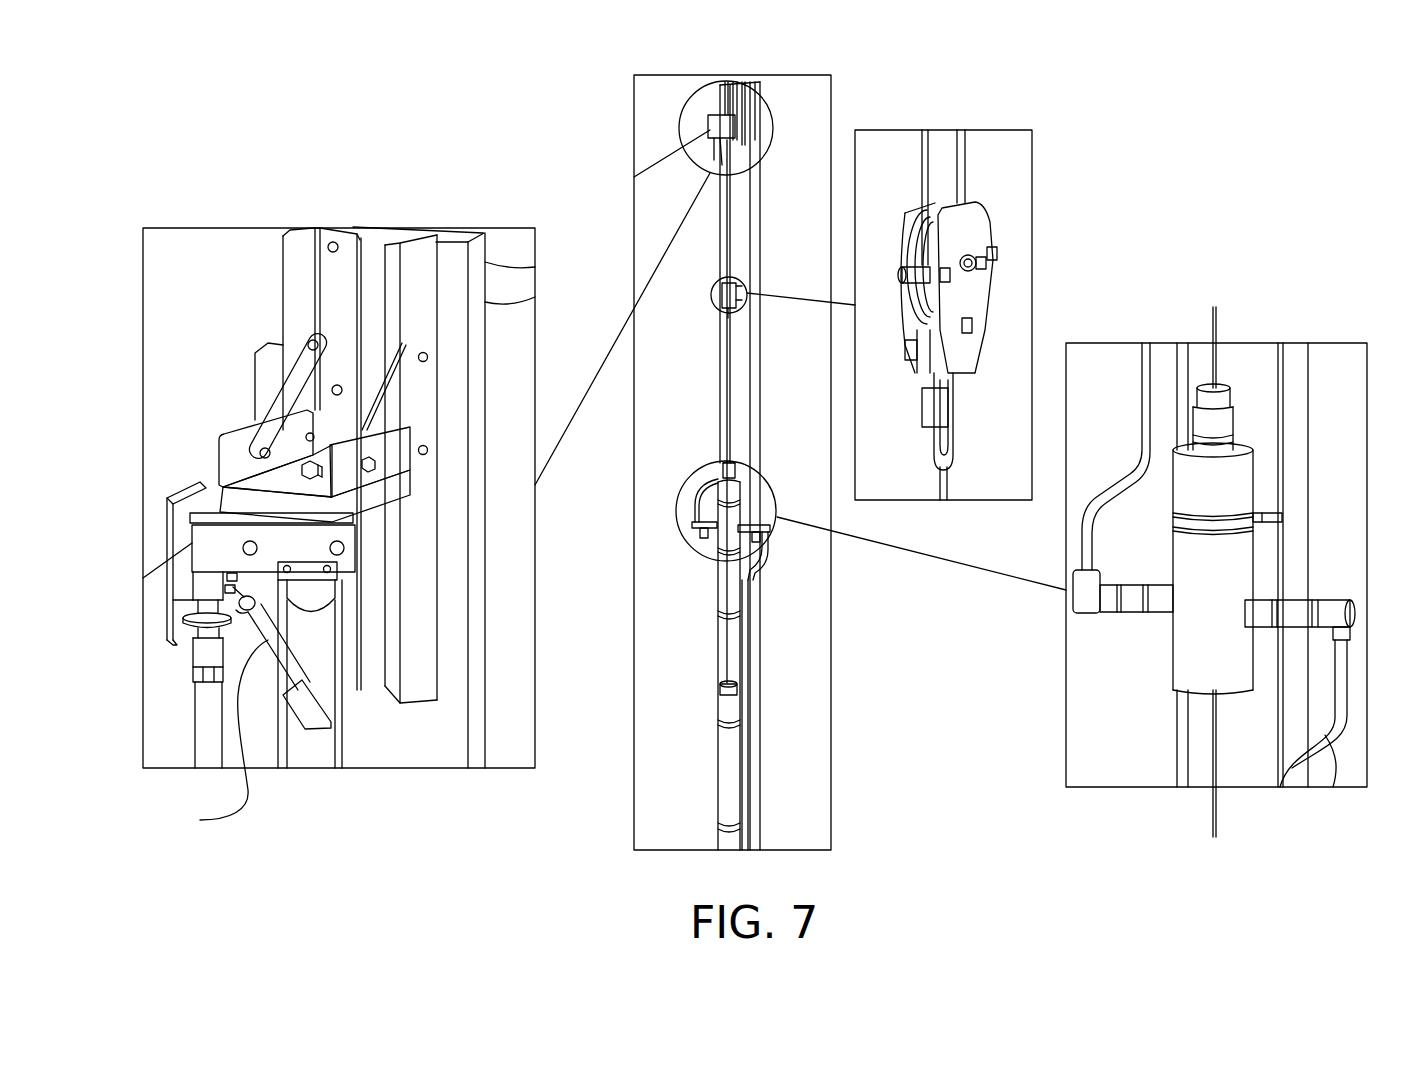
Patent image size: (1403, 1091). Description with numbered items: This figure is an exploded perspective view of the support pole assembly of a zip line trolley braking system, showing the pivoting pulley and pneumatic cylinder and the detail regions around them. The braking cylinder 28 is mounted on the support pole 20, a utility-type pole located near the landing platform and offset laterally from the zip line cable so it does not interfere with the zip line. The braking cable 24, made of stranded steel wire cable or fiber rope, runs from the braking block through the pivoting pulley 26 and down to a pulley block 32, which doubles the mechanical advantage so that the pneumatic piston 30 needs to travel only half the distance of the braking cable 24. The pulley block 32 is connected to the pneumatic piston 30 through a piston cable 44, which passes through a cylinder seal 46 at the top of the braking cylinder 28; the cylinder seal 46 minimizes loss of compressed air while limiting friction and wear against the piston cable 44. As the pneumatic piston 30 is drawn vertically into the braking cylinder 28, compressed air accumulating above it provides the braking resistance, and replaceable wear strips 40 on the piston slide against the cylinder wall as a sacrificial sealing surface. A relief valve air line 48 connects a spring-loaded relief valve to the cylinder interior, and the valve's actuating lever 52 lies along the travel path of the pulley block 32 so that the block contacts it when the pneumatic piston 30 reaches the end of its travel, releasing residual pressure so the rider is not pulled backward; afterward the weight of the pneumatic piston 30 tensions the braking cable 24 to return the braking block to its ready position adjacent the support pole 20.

The support pole 20 is at (503, 287).
The braking cable 24 is at (152, 522).
The pivoting pulley 26 is at (233, 532).
The braking cylinder 28 is at (732, 773).
The pneumatic piston 30 is at (737, 690).
The pulley block 32 is at (733, 277).
The wear strips 40 is at (210, 745).
The piston cable 44 is at (730, 388).
The cylinder seal 46 is at (1216, 388).
The relief valve air line 48 is at (1150, 347).
The actuating lever 52 is at (202, 820).